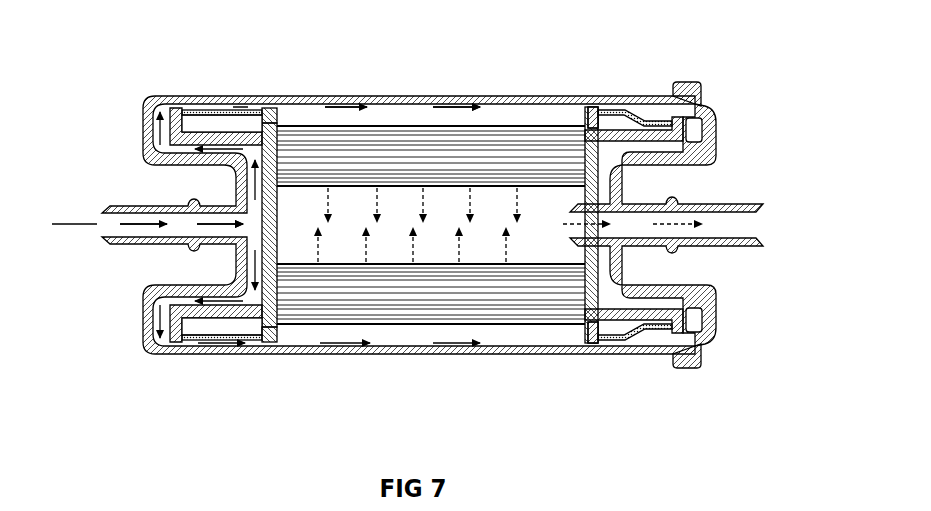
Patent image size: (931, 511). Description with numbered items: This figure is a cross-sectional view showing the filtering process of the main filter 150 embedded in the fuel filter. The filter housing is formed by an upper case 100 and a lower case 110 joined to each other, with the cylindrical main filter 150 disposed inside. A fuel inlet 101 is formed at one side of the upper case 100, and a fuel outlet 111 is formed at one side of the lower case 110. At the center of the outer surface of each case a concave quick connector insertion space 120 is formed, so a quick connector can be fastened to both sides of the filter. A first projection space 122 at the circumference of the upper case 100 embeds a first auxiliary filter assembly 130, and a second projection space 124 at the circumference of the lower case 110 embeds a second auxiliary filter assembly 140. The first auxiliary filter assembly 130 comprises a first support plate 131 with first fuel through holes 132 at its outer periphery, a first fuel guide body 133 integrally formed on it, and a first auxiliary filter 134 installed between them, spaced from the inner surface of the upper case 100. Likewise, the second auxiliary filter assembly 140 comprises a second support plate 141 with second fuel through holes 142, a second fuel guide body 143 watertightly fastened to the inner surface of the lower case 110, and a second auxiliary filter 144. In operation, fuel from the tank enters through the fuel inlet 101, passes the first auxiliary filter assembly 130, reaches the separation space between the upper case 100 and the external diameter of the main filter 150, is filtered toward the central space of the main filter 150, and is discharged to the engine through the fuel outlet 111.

The upper case 100 is at (433, 188).
The fuel inlet 101 is at (108, 205).
The lower case 110 is at (724, 133).
The fuel outlet 111 is at (728, 226).
The quick connector insertion space 120 is at (234, 270).
The first projection space 122 is at (167, 106).
The second projection space 124 is at (698, 107).
The first auxiliary filter assembly 130 is at (188, 348).
The first support plate 131 is at (273, 148).
The first fuel through holes 132 is at (272, 115).
The first fuel guide body 133 is at (187, 135).
The first auxiliary filter 134 is at (216, 112).
The second auxiliary filter assembly 140 is at (640, 352).
The second support plate 141 is at (587, 147).
The second fuel through holes 142 is at (593, 127).
The second fuel guide body 143 is at (640, 137).
The second auxiliary filter 144 is at (633, 112).
The main filter 150 is at (403, 333).